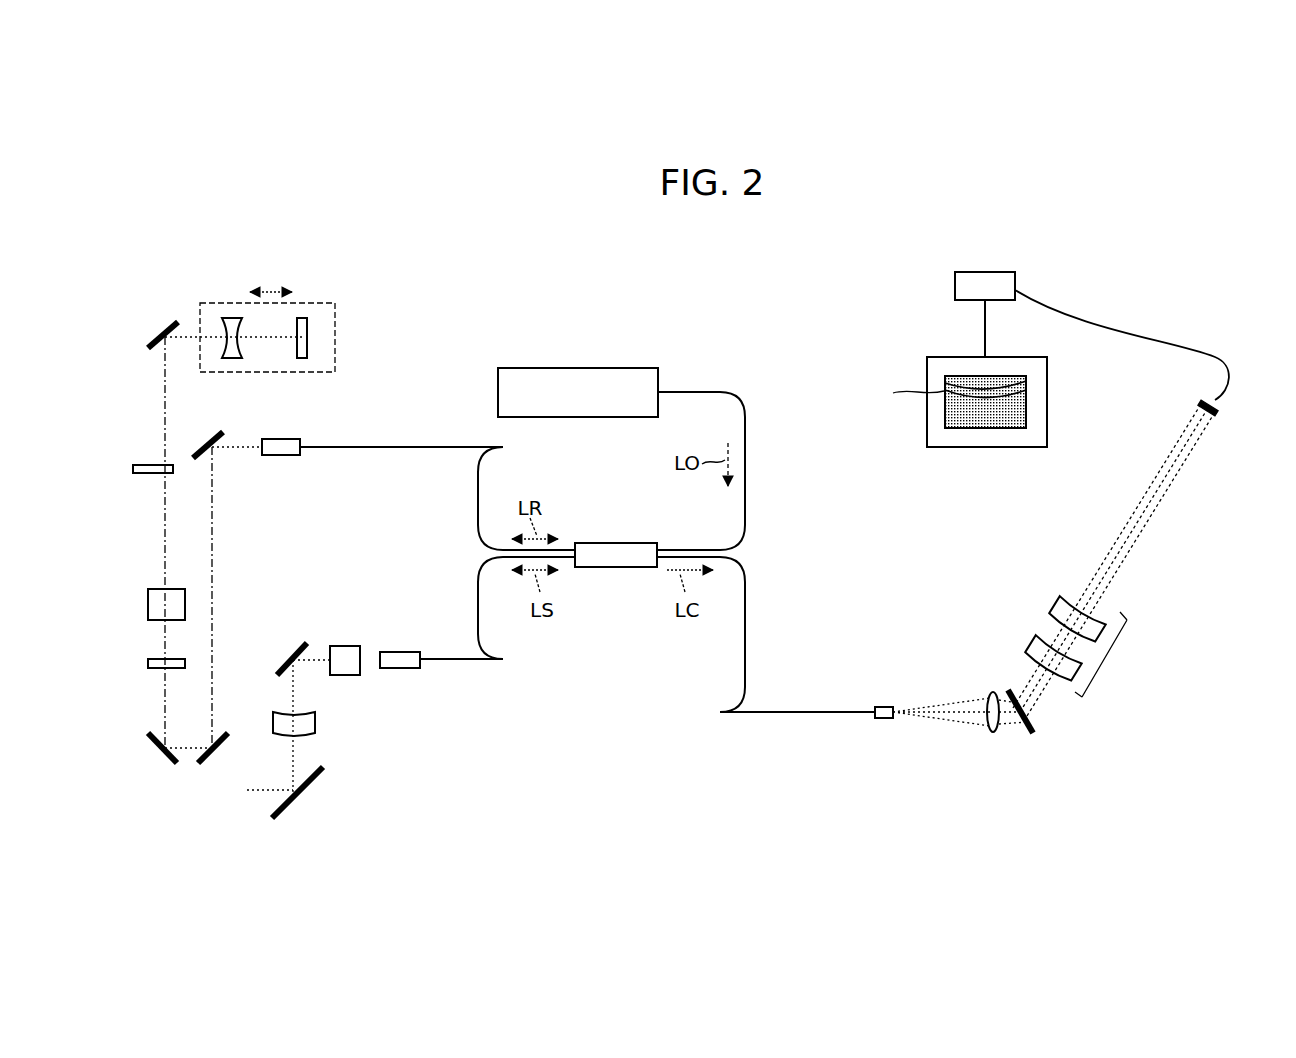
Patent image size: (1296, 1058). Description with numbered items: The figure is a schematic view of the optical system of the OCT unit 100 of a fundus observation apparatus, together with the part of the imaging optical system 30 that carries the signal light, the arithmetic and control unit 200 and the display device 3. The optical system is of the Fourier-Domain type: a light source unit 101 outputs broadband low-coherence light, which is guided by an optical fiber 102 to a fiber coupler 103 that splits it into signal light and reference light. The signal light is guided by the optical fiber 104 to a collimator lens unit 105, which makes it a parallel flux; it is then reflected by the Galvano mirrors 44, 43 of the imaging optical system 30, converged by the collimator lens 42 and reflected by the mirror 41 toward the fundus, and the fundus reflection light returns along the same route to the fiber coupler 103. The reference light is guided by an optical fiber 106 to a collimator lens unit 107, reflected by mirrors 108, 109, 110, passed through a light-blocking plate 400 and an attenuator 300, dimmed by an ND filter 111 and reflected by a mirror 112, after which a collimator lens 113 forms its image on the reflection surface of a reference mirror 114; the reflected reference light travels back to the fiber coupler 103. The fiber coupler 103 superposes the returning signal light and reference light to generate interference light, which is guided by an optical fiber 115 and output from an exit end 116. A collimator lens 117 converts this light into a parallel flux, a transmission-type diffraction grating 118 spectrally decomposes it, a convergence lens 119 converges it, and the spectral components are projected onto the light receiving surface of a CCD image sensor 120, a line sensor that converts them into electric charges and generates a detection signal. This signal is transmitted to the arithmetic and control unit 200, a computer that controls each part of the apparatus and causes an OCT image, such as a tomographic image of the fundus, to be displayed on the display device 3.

The OCT unit 100 is at (340, 240).
The light source unit 101 is at (558, 367).
The optical fiber 102 is at (746, 455).
The fiber coupler 103 is at (611, 542).
The optical fiber 104 is at (478, 640).
The collimator lens unit 105 is at (404, 651).
The optical fiber 106 is at (477, 490).
The collimator lens unit 107 is at (281, 456).
The mirror 108 is at (225, 432).
The mirror 109 is at (218, 766).
The mirror 110 is at (155, 758).
The ND filter 111 is at (143, 475).
The mirror 112 is at (157, 327).
The collimator lens 113 is at (232, 316).
The reference mirror 114 is at (307, 328).
The optical fiber 115 is at (746, 640).
The exit end 116 is at (884, 705).
The collimator lens 117 is at (993, 734).
The diffraction grating 118 is at (1012, 690).
The convergence lens 119 is at (1128, 671).
The CCD image sensor 120 is at (1220, 410).
The arithmetic and control unit 200 is at (986, 271).
The display device 3 is at (985, 448).
The imaging optical system 30 is at (358, 778).
The mirror 41 is at (300, 805).
The collimator lens 42 is at (316, 718).
The Galvano mirror 43 is at (286, 650).
The Galvano mirror 44 is at (348, 645).
The attenuator 300 is at (146, 604).
The light-blocking plate 400 is at (146, 664).